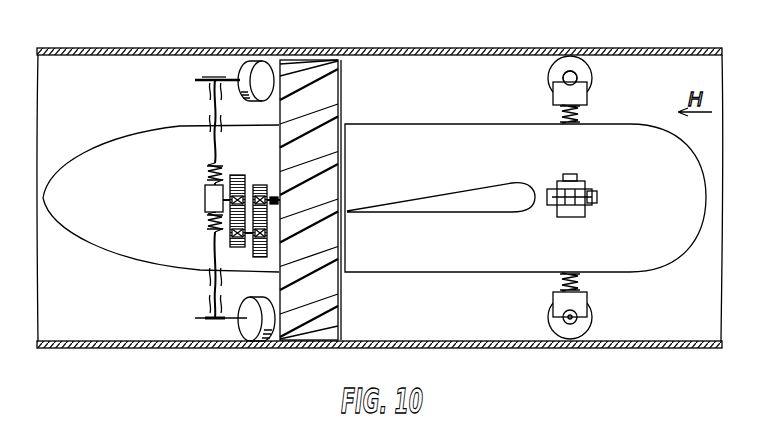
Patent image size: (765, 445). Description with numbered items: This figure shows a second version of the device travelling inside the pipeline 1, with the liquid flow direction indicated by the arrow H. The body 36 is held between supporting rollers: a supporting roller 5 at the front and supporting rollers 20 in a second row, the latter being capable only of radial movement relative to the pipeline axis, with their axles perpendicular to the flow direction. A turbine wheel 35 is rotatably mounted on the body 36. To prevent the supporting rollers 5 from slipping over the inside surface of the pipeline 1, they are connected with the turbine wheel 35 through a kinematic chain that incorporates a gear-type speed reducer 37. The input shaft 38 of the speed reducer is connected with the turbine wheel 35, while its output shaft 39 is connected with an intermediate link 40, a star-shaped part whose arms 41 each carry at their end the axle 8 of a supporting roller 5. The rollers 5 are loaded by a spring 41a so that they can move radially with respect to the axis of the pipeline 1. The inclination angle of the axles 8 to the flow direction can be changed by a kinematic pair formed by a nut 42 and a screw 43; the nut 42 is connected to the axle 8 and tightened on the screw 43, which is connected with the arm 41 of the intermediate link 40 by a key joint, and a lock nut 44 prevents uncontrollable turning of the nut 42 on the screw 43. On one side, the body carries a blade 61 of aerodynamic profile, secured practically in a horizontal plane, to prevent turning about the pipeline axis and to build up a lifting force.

The pipeline 1 is at (654, 50).
The supporting roller 5 is at (259, 64).
The axle 8 is at (236, 79).
The supporting roller 20 is at (590, 78).
The turbine wheel 35 is at (352, 57).
The body 36 is at (492, 134).
The gear-type speed reducer 37 is at (261, 173).
The input shaft 38 is at (275, 208).
The output shaft 39 is at (228, 197).
The intermediate link 40 is at (205, 206).
The arm 41 is at (212, 176).
The spring 41a is at (212, 228).
The nut 42 is at (210, 93).
The screw 43 is at (210, 114).
The lock nut 44 is at (210, 132).
The blade 61 is at (442, 201).